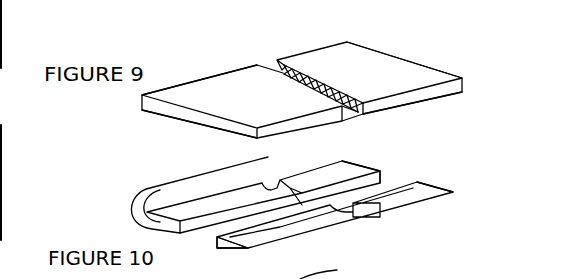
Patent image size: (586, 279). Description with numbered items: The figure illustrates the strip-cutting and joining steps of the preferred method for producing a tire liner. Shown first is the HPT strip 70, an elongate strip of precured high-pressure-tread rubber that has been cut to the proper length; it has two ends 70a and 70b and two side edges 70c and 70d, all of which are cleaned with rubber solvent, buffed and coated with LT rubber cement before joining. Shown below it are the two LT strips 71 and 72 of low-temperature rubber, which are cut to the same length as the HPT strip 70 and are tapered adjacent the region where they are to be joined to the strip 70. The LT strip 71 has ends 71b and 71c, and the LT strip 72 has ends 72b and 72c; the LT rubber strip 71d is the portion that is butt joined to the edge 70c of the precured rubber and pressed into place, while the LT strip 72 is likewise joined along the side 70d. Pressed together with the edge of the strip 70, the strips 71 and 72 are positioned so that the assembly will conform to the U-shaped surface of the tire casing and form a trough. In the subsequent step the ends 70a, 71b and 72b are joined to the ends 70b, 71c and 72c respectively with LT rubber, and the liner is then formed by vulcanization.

In FIG. 9, the HPT strip 70 is at (367, 63).
In FIG. 9, the end of strip 70 70a is at (192, 117).
In FIG. 9, the end of strip 70 70b is at (412, 61).
In FIG. 9, the side of strip 70 70c is at (167, 88).
In FIG. 9, the side of strip 70 70d is at (400, 100).
In FIG. 10, the LT strip 71 is at (313, 172).
In FIG. 10, the end of strip 71 71b is at (215, 190).
In FIG. 10, the end of strip 71 71c is at (367, 172).
In FIG. 10, the LT rubber strip 71d is at (337, 270).
In FIG. 10, the LT strip 72 is at (395, 197).
In FIG. 10, the end of strip 72 72b is at (217, 243).
In FIG. 10, the end of strip 72 72c is at (427, 187).